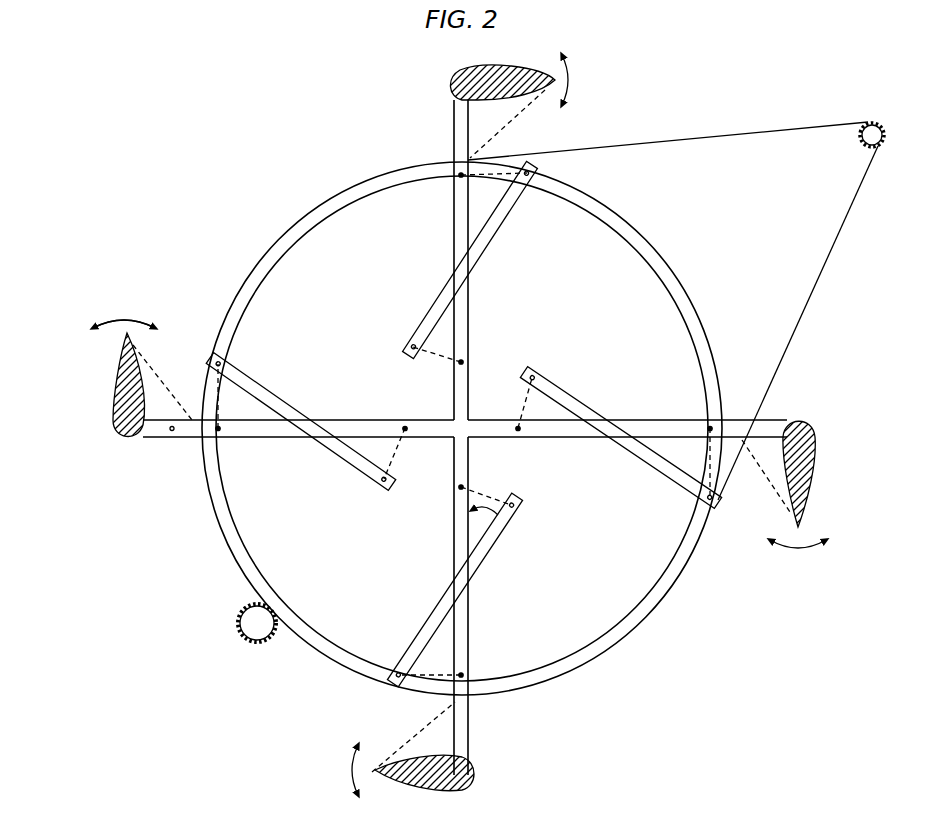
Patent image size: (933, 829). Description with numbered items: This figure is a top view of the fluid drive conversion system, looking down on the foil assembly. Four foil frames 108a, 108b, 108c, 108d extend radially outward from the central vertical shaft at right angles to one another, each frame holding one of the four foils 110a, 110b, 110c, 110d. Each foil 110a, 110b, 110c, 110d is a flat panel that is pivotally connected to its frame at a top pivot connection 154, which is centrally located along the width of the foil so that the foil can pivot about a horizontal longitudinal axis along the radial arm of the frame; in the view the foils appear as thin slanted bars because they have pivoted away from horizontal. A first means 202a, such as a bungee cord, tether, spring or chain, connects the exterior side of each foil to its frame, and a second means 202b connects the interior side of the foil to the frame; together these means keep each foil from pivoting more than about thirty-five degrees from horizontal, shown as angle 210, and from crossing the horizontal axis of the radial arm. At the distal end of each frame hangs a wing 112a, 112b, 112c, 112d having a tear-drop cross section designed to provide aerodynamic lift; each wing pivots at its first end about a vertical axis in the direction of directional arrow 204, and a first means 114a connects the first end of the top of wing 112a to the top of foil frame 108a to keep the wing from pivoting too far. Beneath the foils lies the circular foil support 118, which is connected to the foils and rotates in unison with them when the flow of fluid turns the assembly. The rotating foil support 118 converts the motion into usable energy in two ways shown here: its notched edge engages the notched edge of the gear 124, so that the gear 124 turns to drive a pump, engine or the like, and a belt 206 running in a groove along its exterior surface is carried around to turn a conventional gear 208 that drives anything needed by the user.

The foil frame 108a is at (172, 438).
The foil frame 108b is at (470, 735).
The foil frame 108c is at (785, 417).
The foil frame 108d is at (455, 125).
The foil 110a is at (252, 380).
The foil 110b is at (478, 570).
The foil 110c is at (650, 456).
The foil 110d is at (498, 240).
The wing 112a is at (112, 426).
The wing 112b is at (470, 778).
The wing 112c is at (818, 458).
The wing 112d is at (455, 72).
The first means 114a is at (160, 365).
The foil support 118 is at (228, 556).
The gear system 124 is at (256, 640).
The top pivot connection 154 is at (313, 420).
The first means 202a is at (485, 178).
The second means 202b is at (440, 366).
The directional arrow 204 is at (133, 313).
The belt 206 is at (688, 142).
The gear 208 is at (868, 122).
The angle 210 is at (490, 525).